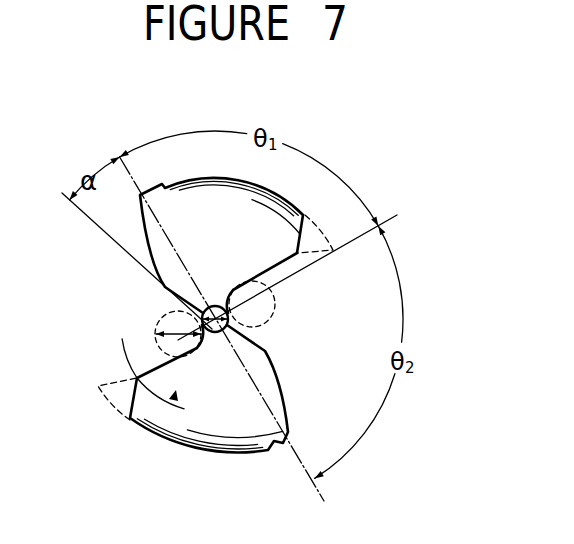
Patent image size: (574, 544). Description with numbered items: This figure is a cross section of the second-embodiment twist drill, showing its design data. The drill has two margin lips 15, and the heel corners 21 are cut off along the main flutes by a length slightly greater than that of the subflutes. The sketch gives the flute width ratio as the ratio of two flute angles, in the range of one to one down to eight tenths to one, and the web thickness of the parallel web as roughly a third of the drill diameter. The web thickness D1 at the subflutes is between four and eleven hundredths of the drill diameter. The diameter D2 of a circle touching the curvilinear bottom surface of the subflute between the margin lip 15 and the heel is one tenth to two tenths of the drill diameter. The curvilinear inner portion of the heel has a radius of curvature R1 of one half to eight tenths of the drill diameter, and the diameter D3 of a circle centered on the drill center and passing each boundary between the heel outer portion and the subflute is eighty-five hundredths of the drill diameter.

The margin lip 15 is at (148, 227).
The heel corner 21 is at (320, 237).
The web thickness at the subflutes D1 is at (215, 306).
The diameter of circle touching the curvilinear bottom surface of the subflute D2 is at (172, 313).
The diameter of circle passing each boundary between the outer portion of the heel a D3 is at (210, 330).
The radius of curvature of the curvilinear inner portion of the heel R1 is at (157, 361).